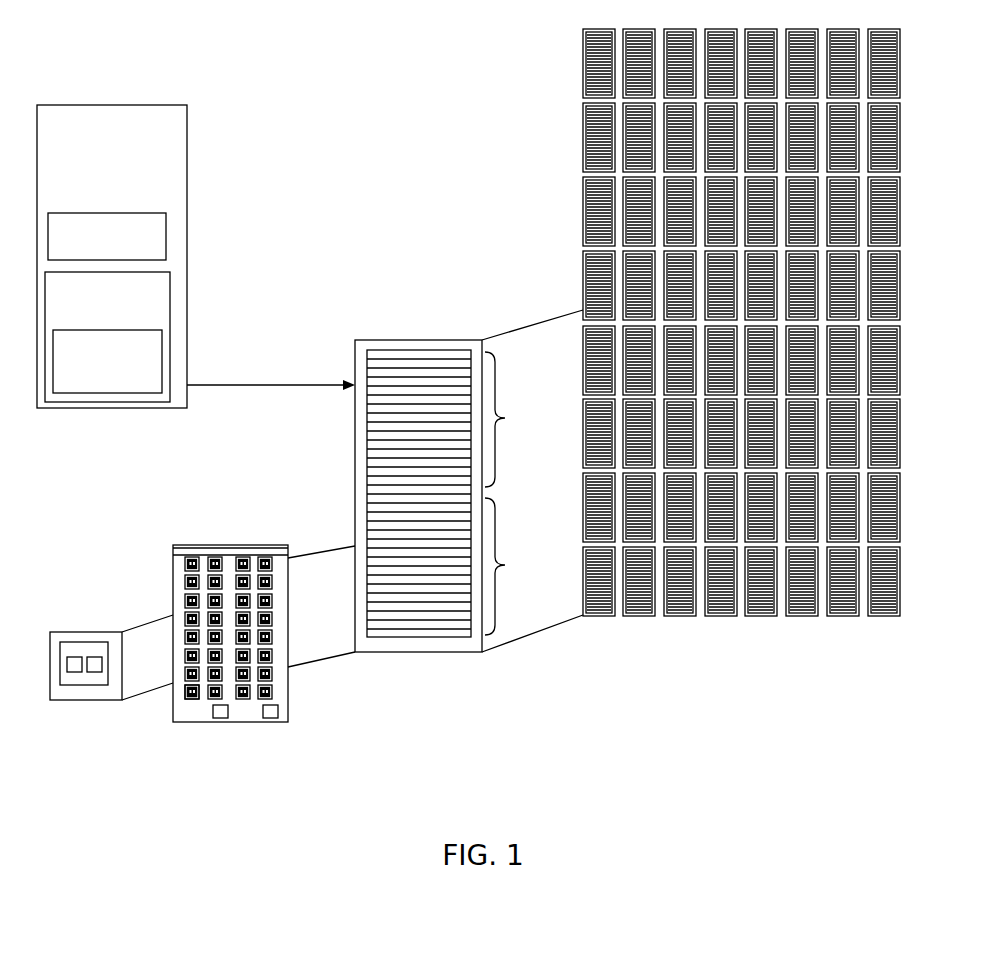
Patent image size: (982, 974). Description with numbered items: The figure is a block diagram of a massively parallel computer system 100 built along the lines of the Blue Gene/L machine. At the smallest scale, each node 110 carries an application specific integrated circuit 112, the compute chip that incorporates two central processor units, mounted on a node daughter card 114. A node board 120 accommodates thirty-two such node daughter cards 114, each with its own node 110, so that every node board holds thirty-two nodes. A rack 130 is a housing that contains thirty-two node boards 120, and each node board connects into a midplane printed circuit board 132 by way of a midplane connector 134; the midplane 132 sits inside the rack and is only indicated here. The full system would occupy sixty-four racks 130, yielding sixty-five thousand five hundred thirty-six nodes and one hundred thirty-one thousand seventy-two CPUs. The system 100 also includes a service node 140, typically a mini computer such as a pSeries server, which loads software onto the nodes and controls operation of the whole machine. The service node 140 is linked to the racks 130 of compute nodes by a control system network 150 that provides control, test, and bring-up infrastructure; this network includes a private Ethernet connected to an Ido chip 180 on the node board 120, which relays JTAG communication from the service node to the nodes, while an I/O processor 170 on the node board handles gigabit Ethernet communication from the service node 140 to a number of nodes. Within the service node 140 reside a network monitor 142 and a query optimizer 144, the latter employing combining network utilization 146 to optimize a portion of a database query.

The massively parallel computer system 100 is at (262, 130).
The node 110 is at (68, 632).
The application specific integrated circuit 112 is at (62, 686).
The node daughter card 114 is at (96, 703).
The node board 120 is at (288, 600).
The rack 130 is at (396, 340).
The midplane printed circuit board 132 is at (531, 493).
The midplane connector 134 is at (173, 549).
The service node 140 is at (112, 256).
The network monitor 142 is at (166, 236).
The query optimizer 144 is at (170, 300).
The combining network utilization 146 is at (162, 362).
The control system network 150 is at (213, 390).
The I/O processor 170 is at (221, 718).
The Ido chip 180 is at (270, 718).